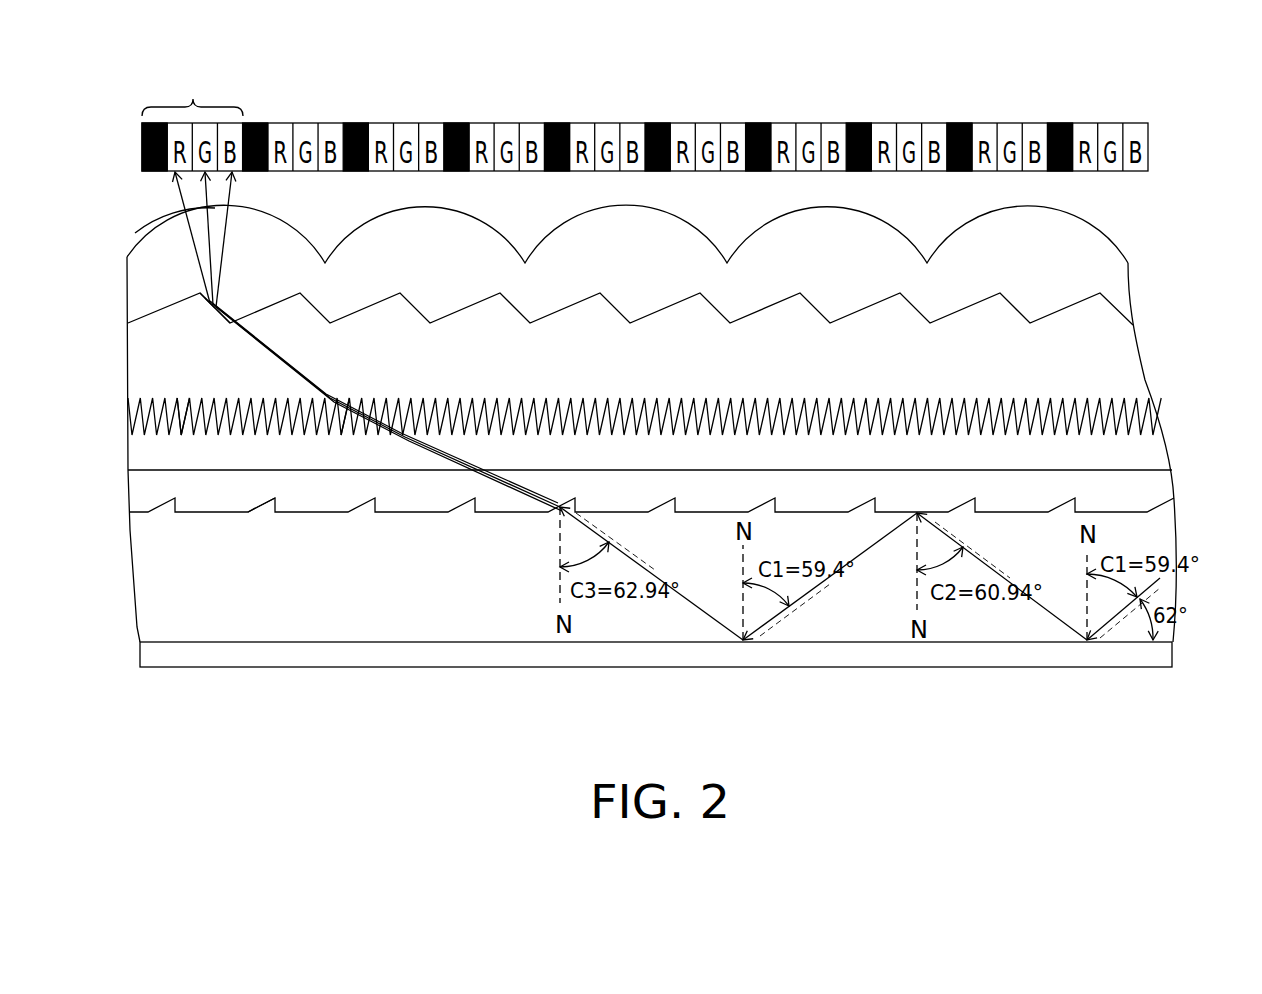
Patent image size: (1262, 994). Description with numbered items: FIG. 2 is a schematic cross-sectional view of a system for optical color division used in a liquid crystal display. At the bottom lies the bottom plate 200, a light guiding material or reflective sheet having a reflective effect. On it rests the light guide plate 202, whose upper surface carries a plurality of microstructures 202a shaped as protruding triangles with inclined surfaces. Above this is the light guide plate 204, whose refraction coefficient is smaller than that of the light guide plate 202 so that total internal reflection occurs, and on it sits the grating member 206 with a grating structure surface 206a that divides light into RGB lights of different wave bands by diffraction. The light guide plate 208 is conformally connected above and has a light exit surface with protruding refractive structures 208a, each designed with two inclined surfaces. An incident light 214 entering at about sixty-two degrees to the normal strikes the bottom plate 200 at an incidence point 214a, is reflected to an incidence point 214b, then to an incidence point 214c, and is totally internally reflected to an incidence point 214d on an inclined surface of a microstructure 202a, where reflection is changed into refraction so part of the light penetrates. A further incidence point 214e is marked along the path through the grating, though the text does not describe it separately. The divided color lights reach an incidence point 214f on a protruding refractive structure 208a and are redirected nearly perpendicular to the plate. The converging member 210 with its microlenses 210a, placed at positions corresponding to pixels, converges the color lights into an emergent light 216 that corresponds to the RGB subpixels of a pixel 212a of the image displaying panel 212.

The bottom plate 200 is at (1165, 652).
The light guide plate 202 is at (1152, 532).
The microstructures 202a is at (268, 505).
The light guide plate 204 is at (1152, 487).
The grating member 206 is at (1152, 452).
The grating structure surface 206a is at (188, 422).
The light guide plate 208 is at (1120, 373).
The protruding refractive structures 208a is at (187, 310).
The converging member 210 is at (1092, 263).
The microlenses 210a is at (135, 233).
The image displaying panel 212 is at (1148, 148).
The pixel 212a is at (192, 95).
The incident light 214 is at (1130, 615).
The incidence point 214a is at (1086, 655).
The incidence point 214b is at (905, 532).
The incidence point 214c is at (745, 655).
The incidence point 214d is at (552, 520).
The refraction point at second prism layer 214e is at (342, 440).
The incidence point 214f is at (222, 322).
The emergent light 216 is at (168, 200).